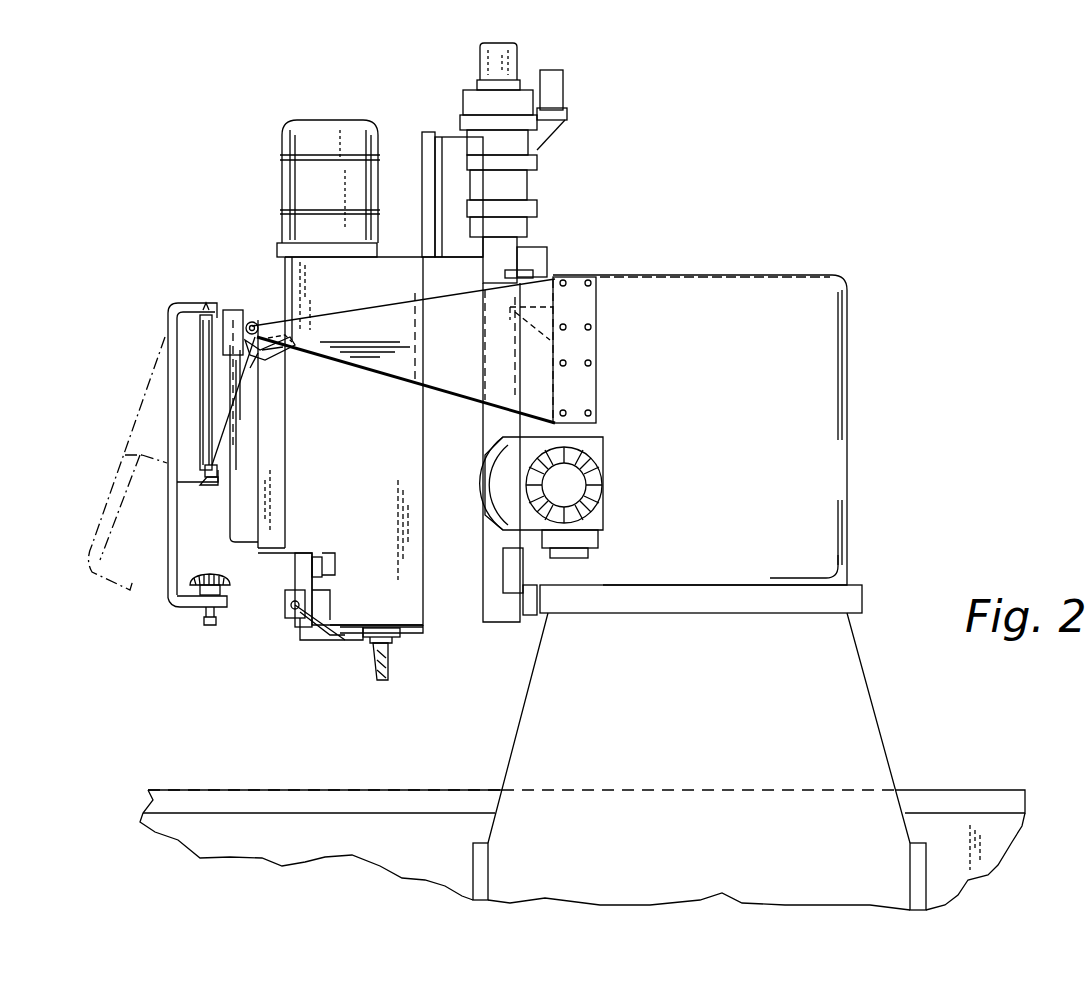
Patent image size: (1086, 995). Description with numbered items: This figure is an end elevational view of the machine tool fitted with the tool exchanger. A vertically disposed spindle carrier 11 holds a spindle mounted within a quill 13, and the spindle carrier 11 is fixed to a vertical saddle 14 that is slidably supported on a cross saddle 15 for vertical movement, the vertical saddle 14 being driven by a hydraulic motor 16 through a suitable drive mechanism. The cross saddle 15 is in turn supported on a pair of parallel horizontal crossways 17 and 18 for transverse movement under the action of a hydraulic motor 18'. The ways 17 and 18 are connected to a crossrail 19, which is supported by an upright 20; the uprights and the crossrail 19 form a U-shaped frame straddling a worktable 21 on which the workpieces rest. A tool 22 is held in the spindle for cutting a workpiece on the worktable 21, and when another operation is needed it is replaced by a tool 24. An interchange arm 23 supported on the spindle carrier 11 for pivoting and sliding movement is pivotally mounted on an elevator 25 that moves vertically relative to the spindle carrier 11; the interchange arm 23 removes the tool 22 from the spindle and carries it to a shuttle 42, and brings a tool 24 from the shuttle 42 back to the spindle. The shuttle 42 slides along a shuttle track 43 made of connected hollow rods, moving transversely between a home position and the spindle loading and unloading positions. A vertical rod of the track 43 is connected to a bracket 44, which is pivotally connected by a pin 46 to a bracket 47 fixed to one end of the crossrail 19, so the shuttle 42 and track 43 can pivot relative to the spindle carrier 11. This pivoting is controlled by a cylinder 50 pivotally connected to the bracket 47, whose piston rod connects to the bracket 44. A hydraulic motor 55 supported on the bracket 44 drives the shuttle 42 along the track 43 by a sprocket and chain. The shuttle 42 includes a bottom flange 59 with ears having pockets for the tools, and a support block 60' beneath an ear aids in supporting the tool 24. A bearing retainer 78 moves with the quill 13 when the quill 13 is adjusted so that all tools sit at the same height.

The spindle carrier 11 is at (376, 493).
The quill 13 is at (402, 637).
The vertical saddle 14 is at (468, 607).
The cross saddle 15 is at (502, 243).
The hydraulic motor 16 is at (462, 101).
The crossway 17 is at (523, 265).
The crossway 18 is at (540, 581).
The hydraulic motor 18' is at (560, 497).
The crossrail 19 is at (718, 270).
The upright 20 is at (880, 733).
The worktable 21 is at (407, 790).
The tool 22 is at (377, 670).
The interchange arm 23 is at (321, 652).
The tool 24 is at (213, 574).
The elevator 25 is at (285, 560).
The shuttle 42 is at (158, 539).
The shuttle track 43 is at (198, 376).
The bracket 44 is at (218, 460).
The pin 46 is at (258, 320).
The bracket 47 is at (403, 377).
The cylinder 50 is at (260, 357).
The hydraulic motor 55 is at (237, 308).
The bottom flange 59 is at (180, 608).
The support block 60' is at (198, 626).
The bearing retainer 78 is at (412, 630).